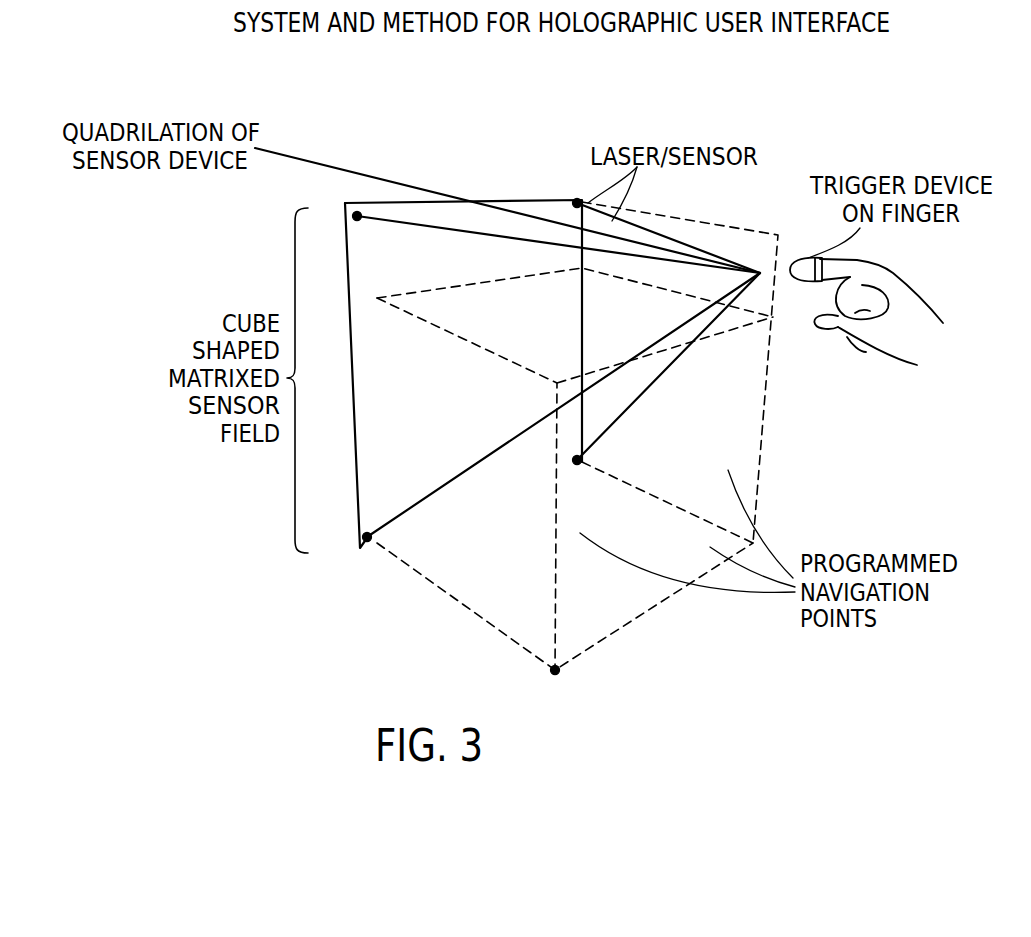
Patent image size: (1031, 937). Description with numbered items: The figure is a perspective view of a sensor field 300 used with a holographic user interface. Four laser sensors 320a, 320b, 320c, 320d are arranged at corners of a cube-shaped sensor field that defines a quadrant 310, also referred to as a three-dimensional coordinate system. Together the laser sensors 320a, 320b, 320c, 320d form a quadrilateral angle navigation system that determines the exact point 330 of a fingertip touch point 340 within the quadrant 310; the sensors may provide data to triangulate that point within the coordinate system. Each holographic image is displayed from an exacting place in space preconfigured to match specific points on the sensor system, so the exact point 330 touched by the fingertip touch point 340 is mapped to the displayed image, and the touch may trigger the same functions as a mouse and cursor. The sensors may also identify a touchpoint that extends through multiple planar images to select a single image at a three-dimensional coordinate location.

The holographic user interface system 300 is at (480, 151).
The quadrant 310 is at (585, 623).
The laser sensor 320a is at (355, 213).
The laser sensor 320b is at (575, 203).
The laser sensor 320c is at (367, 541).
The laser sensor 320d is at (581, 459).
The exact point 330 is at (760, 266).
The fingertip touch point 340 is at (804, 282).